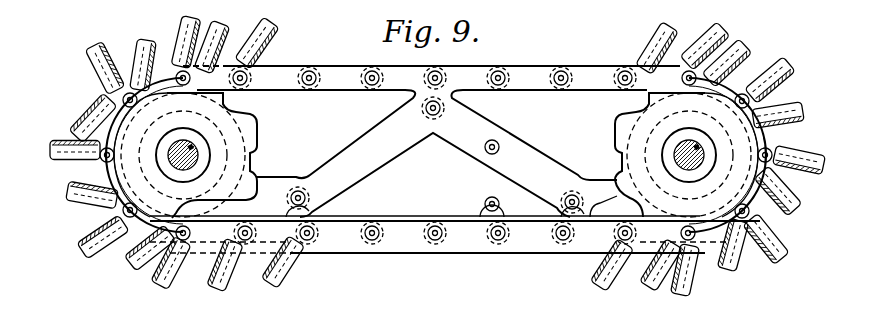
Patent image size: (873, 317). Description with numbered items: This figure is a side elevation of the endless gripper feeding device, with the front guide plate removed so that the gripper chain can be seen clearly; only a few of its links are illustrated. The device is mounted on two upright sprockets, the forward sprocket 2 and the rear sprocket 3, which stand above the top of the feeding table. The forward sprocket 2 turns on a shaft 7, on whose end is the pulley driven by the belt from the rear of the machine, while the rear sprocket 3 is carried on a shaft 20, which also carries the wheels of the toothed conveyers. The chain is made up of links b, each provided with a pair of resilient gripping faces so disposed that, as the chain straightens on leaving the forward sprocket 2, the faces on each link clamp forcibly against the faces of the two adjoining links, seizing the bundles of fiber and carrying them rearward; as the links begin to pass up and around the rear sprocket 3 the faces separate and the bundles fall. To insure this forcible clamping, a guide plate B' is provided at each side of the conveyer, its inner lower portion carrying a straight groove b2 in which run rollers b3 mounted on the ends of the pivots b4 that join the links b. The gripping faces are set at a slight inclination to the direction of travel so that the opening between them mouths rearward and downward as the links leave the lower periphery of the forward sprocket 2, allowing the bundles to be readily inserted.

The forward sprocket 2 is at (250, 132).
The rear sprocket 3 is at (617, 125).
The shaft 7 is at (190, 154).
The shaft 20 is at (680, 156).
The guide plate B' is at (455, 148).
The link b is at (163, 48).
The straight groove b2 is at (403, 235).
The rollers b3 is at (327, 222).
The pivots b4 is at (167, 260).